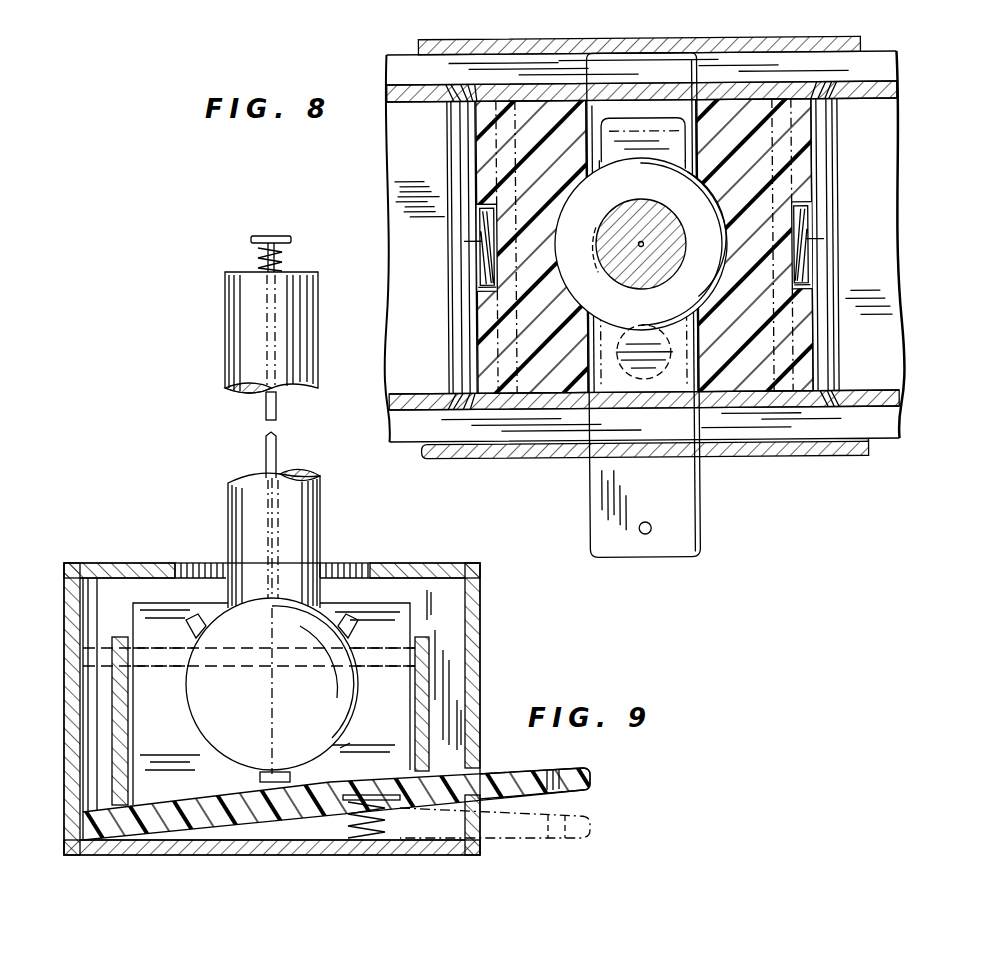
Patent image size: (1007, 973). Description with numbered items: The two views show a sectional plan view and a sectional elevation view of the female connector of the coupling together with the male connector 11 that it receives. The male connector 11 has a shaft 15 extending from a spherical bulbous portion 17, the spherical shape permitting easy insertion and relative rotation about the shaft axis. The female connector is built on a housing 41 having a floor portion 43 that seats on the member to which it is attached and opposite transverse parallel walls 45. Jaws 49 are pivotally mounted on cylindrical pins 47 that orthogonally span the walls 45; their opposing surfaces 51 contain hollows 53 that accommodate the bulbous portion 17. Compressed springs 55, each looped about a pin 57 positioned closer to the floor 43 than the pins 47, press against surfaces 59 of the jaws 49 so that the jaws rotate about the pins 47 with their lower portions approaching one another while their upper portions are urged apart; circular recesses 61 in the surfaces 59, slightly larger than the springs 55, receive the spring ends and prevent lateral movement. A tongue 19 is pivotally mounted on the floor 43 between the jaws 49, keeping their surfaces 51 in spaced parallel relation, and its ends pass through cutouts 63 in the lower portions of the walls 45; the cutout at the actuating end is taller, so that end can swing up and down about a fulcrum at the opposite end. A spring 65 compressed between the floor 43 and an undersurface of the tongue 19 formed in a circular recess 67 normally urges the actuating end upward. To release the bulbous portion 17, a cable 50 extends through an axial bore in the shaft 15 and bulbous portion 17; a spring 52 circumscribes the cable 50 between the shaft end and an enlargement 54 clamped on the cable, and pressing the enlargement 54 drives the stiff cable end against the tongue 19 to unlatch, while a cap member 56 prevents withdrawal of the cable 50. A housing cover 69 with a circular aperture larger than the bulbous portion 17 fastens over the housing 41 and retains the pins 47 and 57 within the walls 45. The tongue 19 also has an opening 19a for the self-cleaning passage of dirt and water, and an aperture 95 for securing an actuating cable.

In FIG. 8, the male connector 11 is at (628, 190).
In FIG. 9, the male connector 11 is at (226, 540).
In FIG. 9, the shaft 15 is at (320, 524).
In FIG. 8, the bulbous portion 17 is at (610, 310).
In FIG. 9, the bulbous portion 17 is at (284, 699).
In FIG. 8, the tongue 19 is at (698, 550).
In FIG. 9, the tongue 19 is at (590, 777).
In FIG. 8, the opening 19a is at (652, 118).
In FIG. 9, the opening 19a is at (173, 842).
In FIG. 8, the housing 41 is at (388, 157).
In FIG. 8, the floor portion 43 is at (396, 188).
In FIG. 8, the transverse parallel walls 45 is at (418, 88).
In FIG. 9, the transverse parallel walls 45 is at (112, 648).
In FIG. 8, the cylindrical pins 47 is at (500, 100).
In FIG. 9, the cylindrical pins 47 is at (392, 662).
In FIG. 9, the jaws 49 is at (150, 585).
In FIG. 9, the cable 50 is at (266, 452).
In FIG. 8, the opposing surfaces 51 is at (598, 117).
In FIG. 9, the opposing surfaces 51 is at (267, 743).
In FIG. 9, the spring 52 is at (262, 250).
In FIG. 8, the hollows 53 is at (584, 268).
In FIG. 9, the hollows 53 is at (352, 735).
In FIG. 9, the enlargement 54 is at (268, 236).
In FIG. 8, the compressed springs 55 is at (480, 238).
In FIG. 9, the cap member 56 is at (260, 777).
In FIG. 8, the pins 57 is at (452, 148).
In FIG. 8, the surfaces 59 is at (477, 358).
In FIG. 8, the circular recesses 61 is at (482, 283).
In FIG. 9, the cutouts 63 is at (103, 797).
In FIG. 8, the spring 65 is at (635, 380).
In FIG. 9, the circular recess 67 is at (350, 840).
In FIG. 9, the housing cover 69 is at (445, 565).
In FIG. 8, the aperture 95 is at (645, 534).
In FIG. 9, the aperture 95 is at (556, 796).